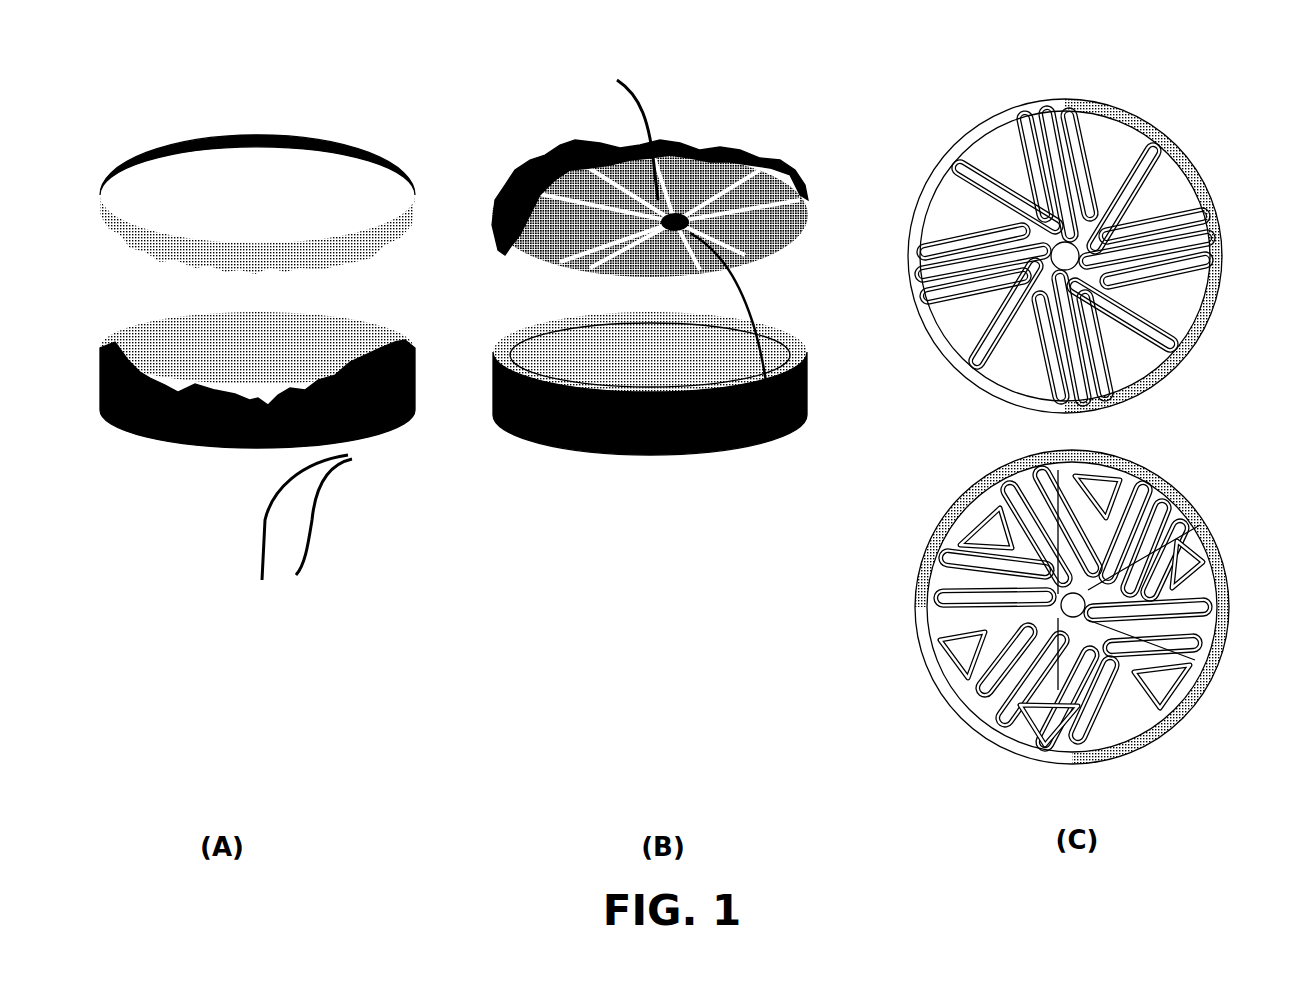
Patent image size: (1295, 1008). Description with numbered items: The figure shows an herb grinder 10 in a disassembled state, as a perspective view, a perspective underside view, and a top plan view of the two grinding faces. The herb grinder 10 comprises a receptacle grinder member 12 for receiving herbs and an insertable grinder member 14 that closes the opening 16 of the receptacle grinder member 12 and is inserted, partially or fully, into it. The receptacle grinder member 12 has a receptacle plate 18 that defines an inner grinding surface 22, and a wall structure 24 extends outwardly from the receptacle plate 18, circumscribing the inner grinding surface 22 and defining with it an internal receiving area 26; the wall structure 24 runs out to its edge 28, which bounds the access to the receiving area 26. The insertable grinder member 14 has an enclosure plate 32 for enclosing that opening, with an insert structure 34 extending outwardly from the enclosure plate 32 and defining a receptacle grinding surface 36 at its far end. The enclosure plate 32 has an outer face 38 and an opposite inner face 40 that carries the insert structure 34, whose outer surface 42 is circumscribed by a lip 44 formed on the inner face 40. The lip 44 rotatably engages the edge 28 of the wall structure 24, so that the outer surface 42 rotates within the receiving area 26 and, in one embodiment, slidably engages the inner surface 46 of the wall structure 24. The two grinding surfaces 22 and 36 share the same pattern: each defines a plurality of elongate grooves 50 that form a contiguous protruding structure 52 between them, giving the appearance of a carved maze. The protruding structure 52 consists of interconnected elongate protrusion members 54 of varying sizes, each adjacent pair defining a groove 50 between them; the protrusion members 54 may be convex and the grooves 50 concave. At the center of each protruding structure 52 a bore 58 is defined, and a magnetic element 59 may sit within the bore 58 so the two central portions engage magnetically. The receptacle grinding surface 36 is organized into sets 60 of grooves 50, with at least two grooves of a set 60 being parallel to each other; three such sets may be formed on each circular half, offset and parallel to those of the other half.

In FIG. 1A, the herb grinder 10 is at (279, 90).
In FIG. 1B, the herb grinder 10 is at (718, 50).
In FIG. 1C, the herb grinder 10 is at (1190, 60).
In FIG. 1A, the receptacle grinder member 12 is at (97, 488).
In FIG. 1B, the receptacle grinder member 12 is at (545, 479).
In FIG. 1C, the receptacle grinder member 12 is at (950, 469).
In FIG. 1A, the insertable grinder member 14 is at (121, 142).
In FIG. 1B, the insertable grinder member 14 is at (521, 104).
In FIG. 1C, the insertable grinder member 14 is at (932, 104).
In FIG. 1C, the opening 16 is at (1203, 517).
In FIG. 1A, the receptacle plate 18 is at (422, 548).
In FIG. 1A, the inner grinding surface 22 is at (203, 505).
In FIG. 1C, the inner grinding surface 22 is at (1158, 688).
In FIG. 1A, the wall structure 24 is at (410, 638).
In FIG. 1A, the internal receiving area 26 is at (369, 540).
In FIG. 1A, the edge 28 is at (258, 472).
In FIG. 1B, the edge 28 is at (700, 520).
In FIG. 1C, the edge 28 is at (1140, 466).
In FIG. 1A, the enclosure plate 32 is at (424, 245).
In FIG. 1A, the insert structure 34 is at (402, 315).
In FIG. 1B, the insert structure 34 is at (521, 276).
In FIG. 1C, the receptacle grinding surface 36 is at (1192, 156).
In FIG. 1A, the outer face 38 is at (335, 192).
In FIG. 1B, the inner face 40 is at (836, 318).
In FIG. 1B, the outer surface 42 is at (650, 355).
In FIG. 1B, the lip 44 is at (522, 333).
In FIG. 1C, the inner surface 46 is at (1200, 655).
In FIG. 1B, the elongate grooves 50 is at (535, 155).
In FIG. 1C, the elongate grooves 50 is at (968, 190).
In FIG. 1B, the protruding structure 52 is at (781, 183).
In FIG. 1A, the elongate protrusion members 54 is at (320, 511).
In FIG. 1B, the elongate protrusion members 54 is at (688, 143).
In FIG. 1B, the bore 58 is at (675, 230).
In FIG. 1C, the magnetic element 59 is at (1070, 258).
In FIG. 1C, the sets of grooves 60 is at (1077, 90).